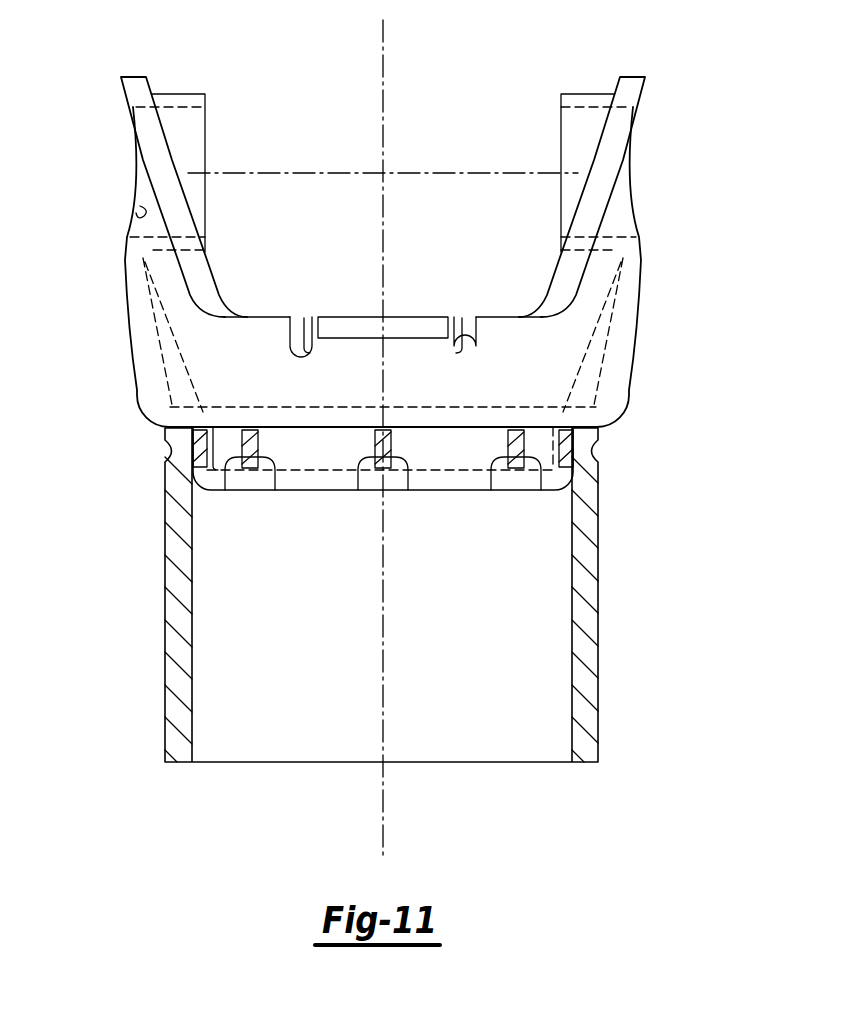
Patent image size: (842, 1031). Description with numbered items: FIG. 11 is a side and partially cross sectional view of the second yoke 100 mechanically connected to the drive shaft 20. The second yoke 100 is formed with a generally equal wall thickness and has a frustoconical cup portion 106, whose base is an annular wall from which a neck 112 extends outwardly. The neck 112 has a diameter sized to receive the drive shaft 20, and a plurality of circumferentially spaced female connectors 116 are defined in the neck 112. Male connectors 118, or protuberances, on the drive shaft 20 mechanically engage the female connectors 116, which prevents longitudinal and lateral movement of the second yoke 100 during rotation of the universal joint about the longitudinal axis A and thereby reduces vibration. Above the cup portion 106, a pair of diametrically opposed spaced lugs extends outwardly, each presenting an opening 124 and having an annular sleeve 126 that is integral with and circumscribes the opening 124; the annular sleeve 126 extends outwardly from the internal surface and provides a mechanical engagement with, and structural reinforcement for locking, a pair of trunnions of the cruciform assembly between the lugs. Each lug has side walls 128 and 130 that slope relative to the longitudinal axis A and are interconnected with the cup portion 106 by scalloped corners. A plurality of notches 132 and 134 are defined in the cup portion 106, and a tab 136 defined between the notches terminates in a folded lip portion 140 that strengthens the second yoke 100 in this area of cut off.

The drive shaft 20 is at (180, 710).
The second yoke 100 is at (443, 132).
The cup portion 106 is at (130, 316).
The neck 112 is at (320, 458).
The female connectors 116 is at (230, 490).
The male connectors 118 is at (200, 450).
The opening 124 is at (136, 213).
The annular sleeve 126 is at (183, 100).
The side wall 128 is at (608, 155).
The side wall 130 is at (155, 137).
The notch 132 is at (466, 350).
The notch 134 is at (309, 350).
The tab 136 is at (410, 350).
The folded lip portion 140 is at (350, 328).
The longitudinal axis A is at (385, 803).